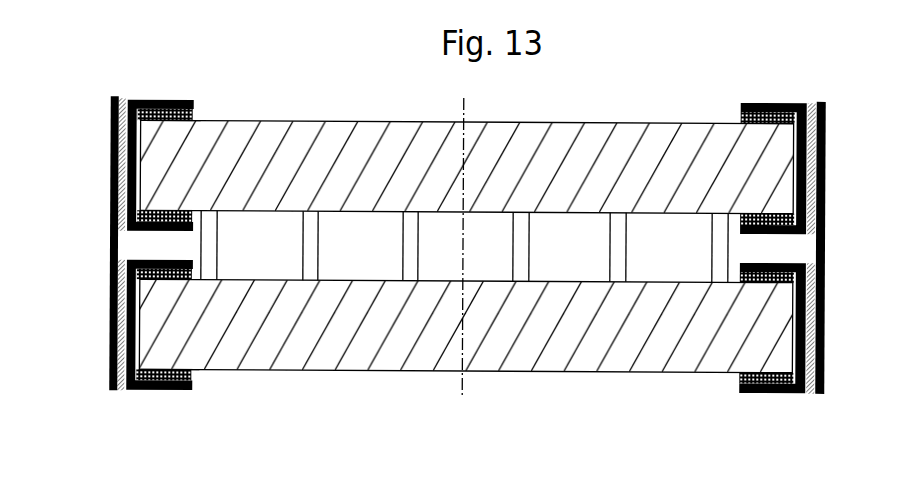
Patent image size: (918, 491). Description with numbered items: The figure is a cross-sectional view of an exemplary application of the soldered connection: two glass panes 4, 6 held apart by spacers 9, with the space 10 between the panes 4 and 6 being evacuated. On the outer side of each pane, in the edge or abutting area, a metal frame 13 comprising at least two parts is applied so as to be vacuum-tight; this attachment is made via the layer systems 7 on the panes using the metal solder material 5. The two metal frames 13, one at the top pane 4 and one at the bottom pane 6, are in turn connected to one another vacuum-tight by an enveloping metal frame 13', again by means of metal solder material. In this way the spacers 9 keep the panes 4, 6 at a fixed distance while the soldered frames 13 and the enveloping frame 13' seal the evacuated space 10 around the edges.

The glass pane 4 is at (738, 183).
The metal solder material 5 is at (122, 98).
The glass pane 6 is at (738, 346).
The layer system 7 is at (199, 119).
The spacer 9 is at (315, 230).
The space 10 is at (588, 233).
The metal frame 13 is at (476, 249).
The enveloping metal frame 13' is at (70, 243).